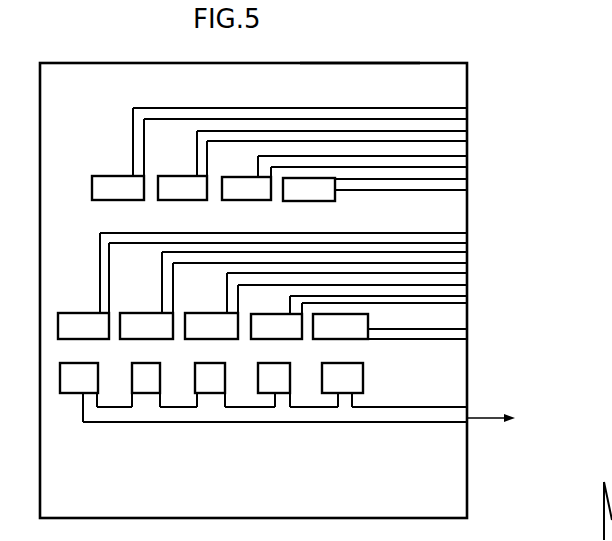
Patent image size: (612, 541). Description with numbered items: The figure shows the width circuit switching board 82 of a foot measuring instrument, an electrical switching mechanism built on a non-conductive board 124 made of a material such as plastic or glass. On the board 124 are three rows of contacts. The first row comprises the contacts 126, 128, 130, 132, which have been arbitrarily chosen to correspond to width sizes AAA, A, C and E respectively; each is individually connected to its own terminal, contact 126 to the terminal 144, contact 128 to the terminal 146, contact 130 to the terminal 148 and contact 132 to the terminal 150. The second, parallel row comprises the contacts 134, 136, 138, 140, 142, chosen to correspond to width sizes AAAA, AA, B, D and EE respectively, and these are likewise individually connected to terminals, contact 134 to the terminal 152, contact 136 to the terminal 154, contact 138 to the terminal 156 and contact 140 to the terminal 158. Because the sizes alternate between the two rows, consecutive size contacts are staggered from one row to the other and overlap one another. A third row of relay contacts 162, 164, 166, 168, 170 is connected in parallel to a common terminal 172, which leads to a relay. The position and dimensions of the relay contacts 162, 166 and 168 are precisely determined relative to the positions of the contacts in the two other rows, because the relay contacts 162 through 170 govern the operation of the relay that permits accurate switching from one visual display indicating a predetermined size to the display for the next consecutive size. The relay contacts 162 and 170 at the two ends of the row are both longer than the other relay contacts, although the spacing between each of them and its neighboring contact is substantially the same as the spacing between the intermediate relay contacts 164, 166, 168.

The width circuit switching board 82 is at (407, 65).
The non-conductive board 124 is at (345, 75).
The contact 126 is at (107, 200).
The contact 128 is at (200, 200).
The contact 130 is at (252, 200).
The contact 132 is at (327, 200).
The contact 134 is at (58, 331).
The contact 136 is at (146, 313).
The contact 138 is at (222, 313).
The contact 140 is at (284, 314).
The contact 142 is at (368, 316).
The terminal 144 is at (465, 117).
The terminal 146 is at (465, 139).
The terminal 148 is at (465, 157).
The terminal 150 is at (465, 185).
The terminal 152 is at (467, 236).
The terminal 154 is at (466, 256).
The terminal 156 is at (455, 280).
The terminal 158 is at (455, 300).
The relay contact 162 is at (73, 393).
The relay contact 164 is at (141, 393).
The relay contact 166 is at (206, 393).
The relay contact 168 is at (266, 393).
The relay contact 170 is at (331, 393).
The common terminal 172 is at (455, 424).